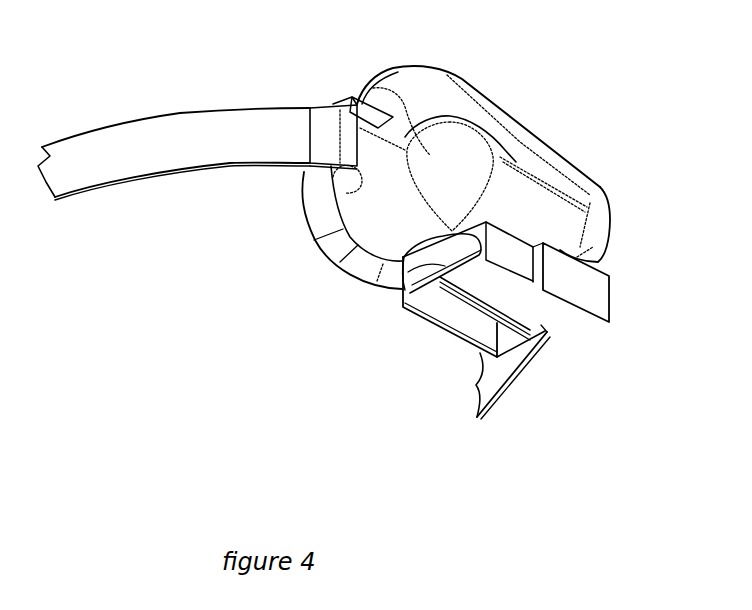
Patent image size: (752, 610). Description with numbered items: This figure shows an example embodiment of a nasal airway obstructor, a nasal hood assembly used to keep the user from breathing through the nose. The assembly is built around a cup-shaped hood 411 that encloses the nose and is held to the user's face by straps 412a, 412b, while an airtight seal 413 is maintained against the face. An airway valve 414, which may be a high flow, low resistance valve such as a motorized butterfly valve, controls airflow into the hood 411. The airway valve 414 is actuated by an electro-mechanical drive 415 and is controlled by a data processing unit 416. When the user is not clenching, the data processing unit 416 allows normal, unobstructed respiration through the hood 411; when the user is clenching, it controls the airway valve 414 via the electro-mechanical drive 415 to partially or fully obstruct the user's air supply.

The cup-shaped hood 411 is at (510, 128).
The strap 412a is at (206, 118).
The strap 412b is at (517, 377).
The airtight seal 413 is at (318, 217).
The airway valve 414 is at (428, 320).
The electro-mechanical drive 415 is at (399, 262).
The data processing unit 416 is at (565, 322).